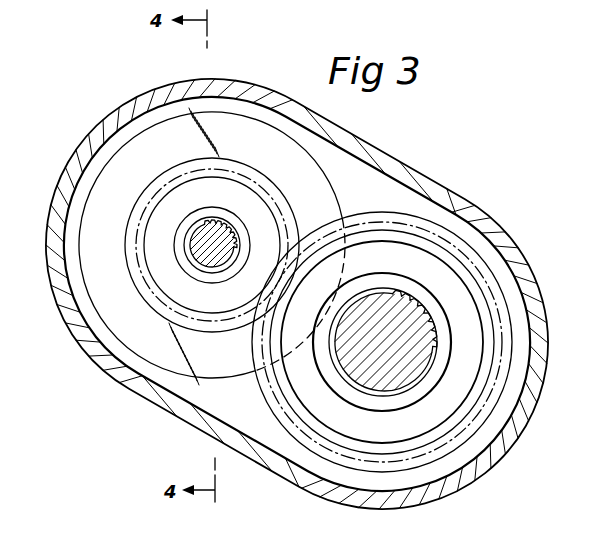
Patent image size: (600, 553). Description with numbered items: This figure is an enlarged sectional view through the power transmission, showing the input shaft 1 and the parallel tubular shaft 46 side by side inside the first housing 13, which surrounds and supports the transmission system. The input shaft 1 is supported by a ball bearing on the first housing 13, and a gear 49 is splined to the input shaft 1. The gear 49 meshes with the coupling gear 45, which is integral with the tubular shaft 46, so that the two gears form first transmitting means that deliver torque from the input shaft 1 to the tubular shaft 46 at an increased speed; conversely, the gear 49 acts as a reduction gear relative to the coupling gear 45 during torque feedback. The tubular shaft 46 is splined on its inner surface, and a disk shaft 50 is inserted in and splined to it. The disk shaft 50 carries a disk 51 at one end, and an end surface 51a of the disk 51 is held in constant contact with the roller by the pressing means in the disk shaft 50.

The input shaft 1 is at (355, 372).
The first housing 13 is at (385, 153).
The coupling gear 45 is at (125, 246).
The tubular shaft 46 is at (177, 237).
The gear 49 is at (337, 452).
The disk shaft 50 is at (200, 257).
The disk 51 is at (108, 362).
The end surface 51a is at (103, 297).